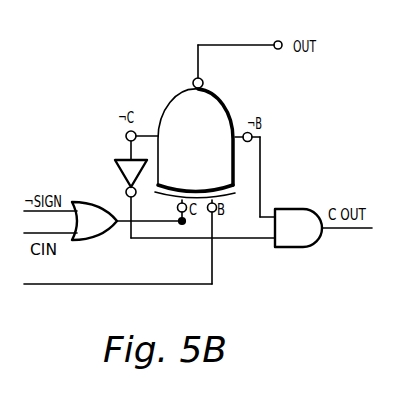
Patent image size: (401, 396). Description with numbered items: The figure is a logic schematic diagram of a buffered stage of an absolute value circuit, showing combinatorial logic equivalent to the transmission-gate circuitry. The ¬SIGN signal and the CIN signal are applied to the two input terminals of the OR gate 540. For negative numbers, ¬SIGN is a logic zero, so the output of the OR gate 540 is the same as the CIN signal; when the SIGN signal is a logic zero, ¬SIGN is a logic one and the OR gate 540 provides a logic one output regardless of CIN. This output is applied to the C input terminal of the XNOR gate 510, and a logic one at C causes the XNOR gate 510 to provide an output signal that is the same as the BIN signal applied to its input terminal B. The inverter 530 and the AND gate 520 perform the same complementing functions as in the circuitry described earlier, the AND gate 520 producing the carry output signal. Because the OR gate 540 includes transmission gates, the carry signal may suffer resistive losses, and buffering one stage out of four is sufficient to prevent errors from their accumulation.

The XNOR gate 510 is at (226, 110).
The AND gate 520 is at (297, 209).
The inverter 530 is at (117, 168).
The OR gate 540 is at (90, 240).